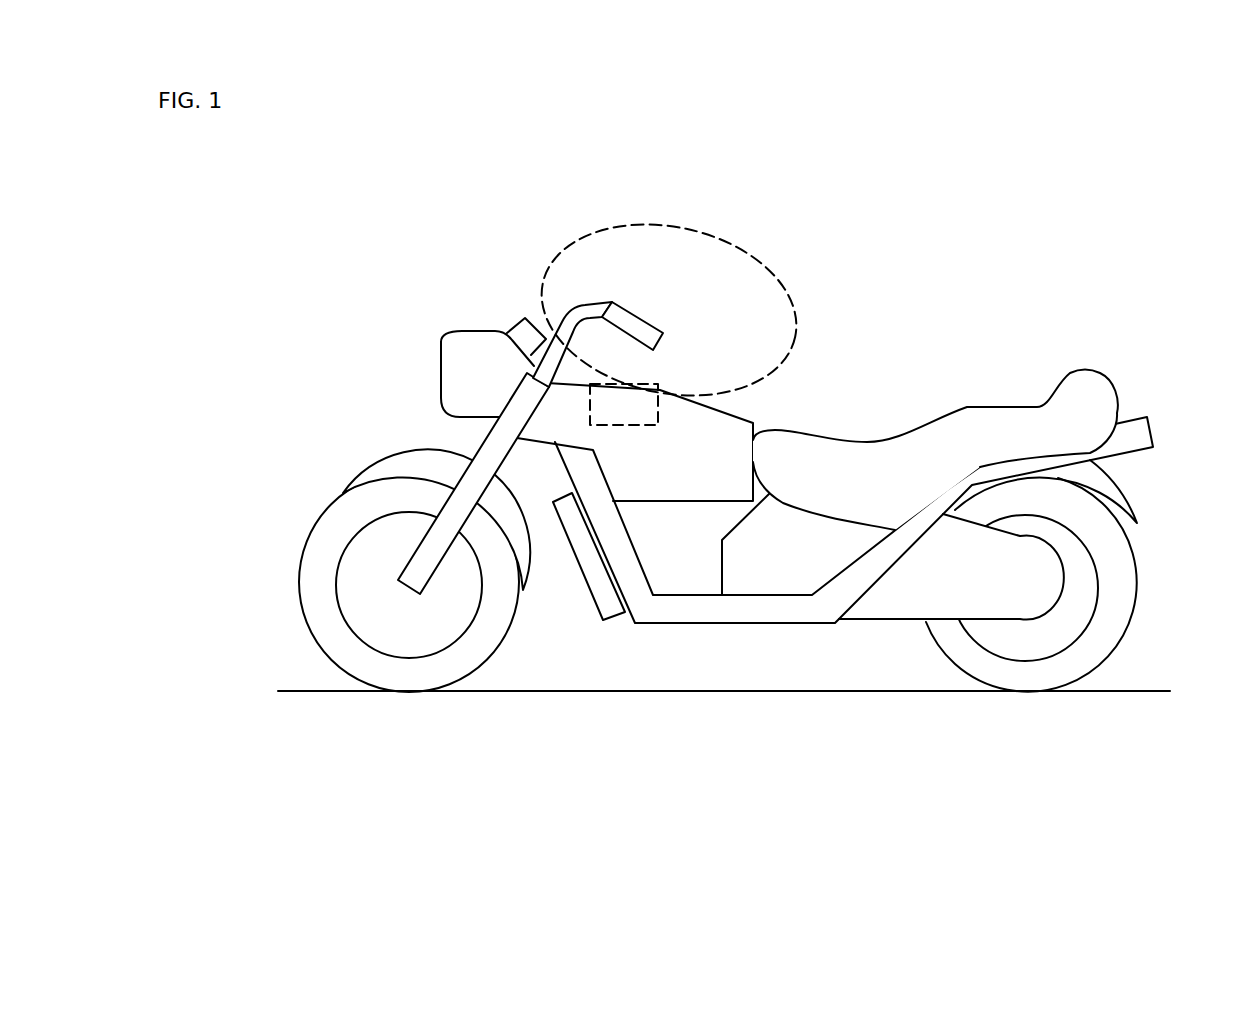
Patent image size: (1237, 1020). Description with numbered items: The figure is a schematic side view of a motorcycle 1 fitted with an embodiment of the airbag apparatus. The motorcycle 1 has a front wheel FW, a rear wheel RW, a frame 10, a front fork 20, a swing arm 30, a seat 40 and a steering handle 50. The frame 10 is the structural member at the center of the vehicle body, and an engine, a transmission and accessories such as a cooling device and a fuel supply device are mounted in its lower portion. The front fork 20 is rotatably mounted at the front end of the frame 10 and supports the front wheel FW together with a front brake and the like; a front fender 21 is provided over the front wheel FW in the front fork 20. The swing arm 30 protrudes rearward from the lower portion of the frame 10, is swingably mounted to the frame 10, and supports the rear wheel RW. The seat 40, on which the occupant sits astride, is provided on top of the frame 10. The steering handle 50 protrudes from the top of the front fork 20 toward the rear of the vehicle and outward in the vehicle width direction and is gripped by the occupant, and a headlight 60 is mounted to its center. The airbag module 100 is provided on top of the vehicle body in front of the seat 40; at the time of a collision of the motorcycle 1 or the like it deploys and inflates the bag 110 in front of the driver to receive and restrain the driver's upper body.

The motorcycle 1 is at (250, 264).
The frame 10 is at (826, 608).
The front fork 20 is at (472, 468).
The front fender 21 is at (373, 465).
The swing arm 30 is at (918, 588).
The seat 40 is at (867, 443).
The steering handle 50 is at (582, 310).
The headlight 60 is at (441, 342).
The airbag module 100 is at (639, 444).
The bag 110 is at (787, 263).
The front wheel FW is at (313, 542).
The rear wheel RW is at (1130, 578).